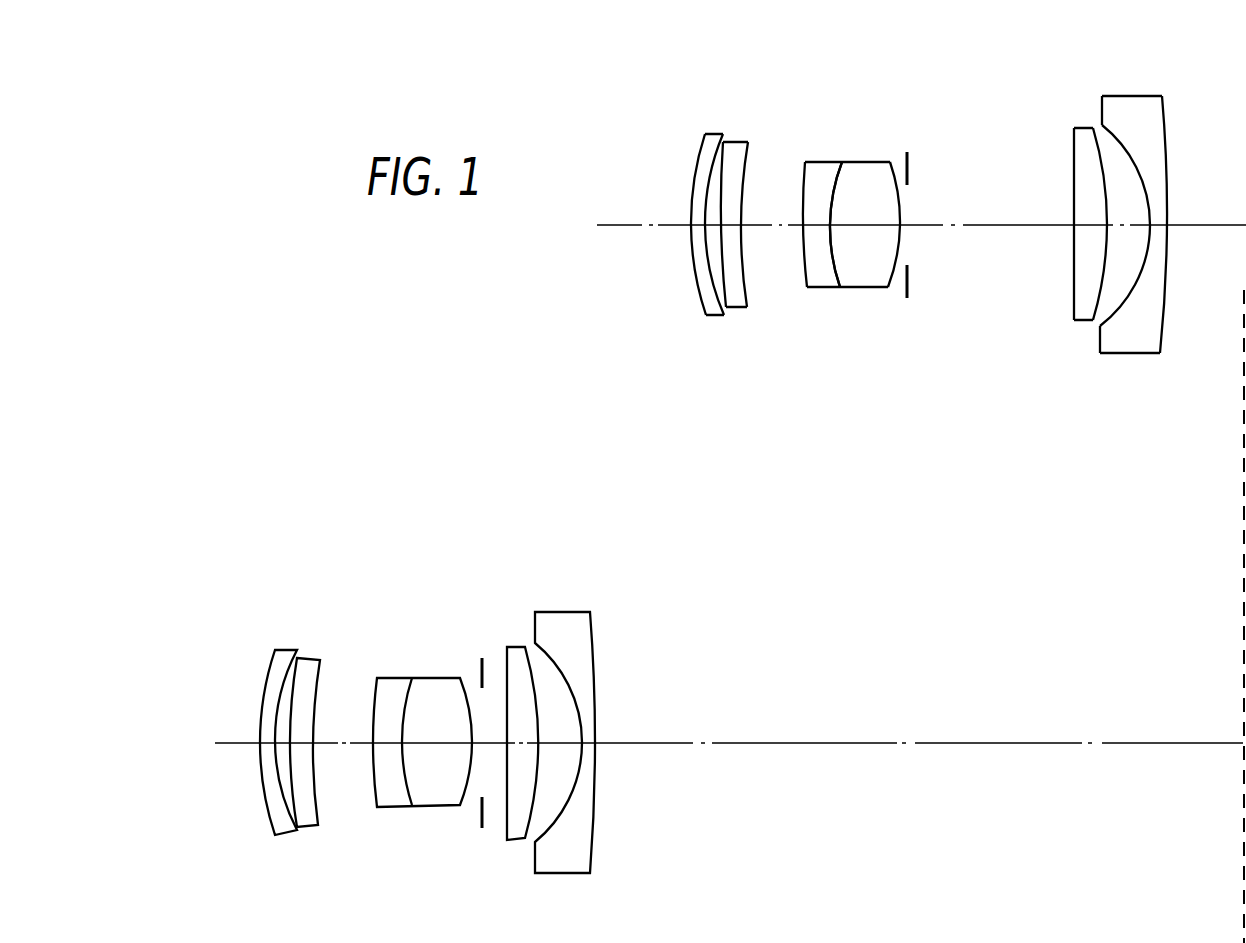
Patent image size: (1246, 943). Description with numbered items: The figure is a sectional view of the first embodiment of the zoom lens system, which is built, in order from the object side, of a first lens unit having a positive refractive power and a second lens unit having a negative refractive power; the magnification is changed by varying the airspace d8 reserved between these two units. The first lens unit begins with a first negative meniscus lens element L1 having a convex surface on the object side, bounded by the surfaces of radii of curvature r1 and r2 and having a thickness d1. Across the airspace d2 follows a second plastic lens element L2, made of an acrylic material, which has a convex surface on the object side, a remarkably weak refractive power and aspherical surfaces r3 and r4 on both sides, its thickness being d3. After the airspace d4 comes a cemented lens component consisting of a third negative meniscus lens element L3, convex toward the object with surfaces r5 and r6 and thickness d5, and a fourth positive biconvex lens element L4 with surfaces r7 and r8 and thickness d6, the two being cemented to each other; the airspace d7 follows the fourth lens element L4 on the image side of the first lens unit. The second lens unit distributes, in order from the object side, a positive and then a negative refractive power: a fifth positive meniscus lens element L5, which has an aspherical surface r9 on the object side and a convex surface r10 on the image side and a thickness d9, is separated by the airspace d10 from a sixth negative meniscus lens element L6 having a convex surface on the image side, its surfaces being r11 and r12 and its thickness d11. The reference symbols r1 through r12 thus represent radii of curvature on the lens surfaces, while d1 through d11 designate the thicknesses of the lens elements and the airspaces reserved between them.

The radius of curvature r1 is at (698, 157).
The radius of curvature r2 is at (712, 178).
The radius of curvature r3 is at (727, 164).
The radius of curvature r4 is at (759, 181).
The radius of curvature r5 is at (805, 174).
The radius of curvature r6 is at (829, 175).
The radius of curvature r7 is at (889, 178).
The radius of curvature r8 is at (896, 170).
The radius of curvature r9 is at (1074, 145).
The radius of curvature r10 is at (1083, 171).
The radius of curvature r11 is at (1112, 128).
The radius of curvature r12 is at (1178, 179).
The lens thickness d1 is at (697, 236).
The airspace d2 is at (720, 230).
The lens thickness d3 is at (720, 238).
The airspace d4 is at (766, 230).
The lens thickness d5 is at (818, 232).
The lens thickness d6 is at (850, 232).
The airspace d7 is at (904, 232).
The airspace d8 is at (973, 232).
The lens thickness d9 is at (1083, 232).
The airspace d10 is at (1137, 232).
The lens thickness d11 is at (1158, 232).
The first negative meniscus lens element L1 is at (702, 246).
The second plastic lens element L2 is at (749, 237).
The third negative meniscus lens element L3 is at (813, 249).
The fourth positive biconvex lens element L4 is at (868, 253).
The fifth positive meniscus lens element L5 is at (1071, 237).
The sixth negative meniscus lens element L6 is at (1147, 229).